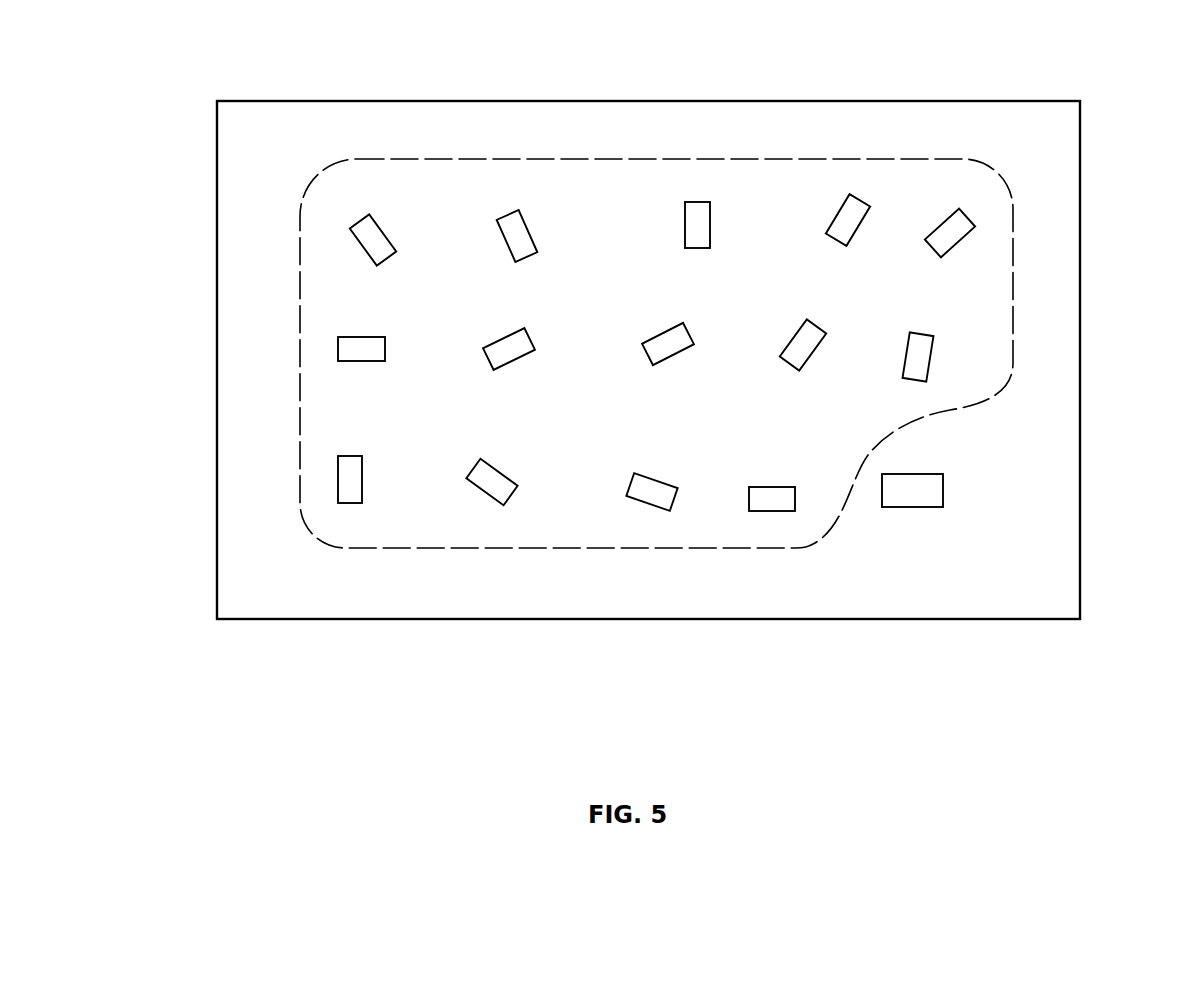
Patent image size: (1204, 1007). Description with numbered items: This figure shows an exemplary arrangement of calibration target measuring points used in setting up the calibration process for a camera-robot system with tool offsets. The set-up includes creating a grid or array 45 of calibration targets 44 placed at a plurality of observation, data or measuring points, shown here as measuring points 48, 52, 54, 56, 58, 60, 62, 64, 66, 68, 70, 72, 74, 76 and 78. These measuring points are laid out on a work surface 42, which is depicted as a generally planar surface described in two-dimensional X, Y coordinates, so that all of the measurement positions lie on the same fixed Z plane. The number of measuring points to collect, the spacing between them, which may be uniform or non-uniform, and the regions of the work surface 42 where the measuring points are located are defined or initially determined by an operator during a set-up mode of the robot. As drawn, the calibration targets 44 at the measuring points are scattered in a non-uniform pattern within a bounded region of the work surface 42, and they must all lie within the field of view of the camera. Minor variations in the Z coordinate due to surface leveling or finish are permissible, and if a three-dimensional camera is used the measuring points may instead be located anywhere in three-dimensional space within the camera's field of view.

The work surface 42 is at (264, 592).
The calibration targets 44 is at (383, 222).
The grid or array 45 is at (1052, 654).
The measuring point 48 is at (905, 507).
The measuring point 52 is at (773, 512).
The measuring point 54 is at (641, 510).
The measuring point 56 is at (481, 502).
The measuring point 58 is at (350, 505).
The measuring point 60 is at (923, 332).
The measuring point 62 is at (812, 360).
The measuring point 64 is at (660, 332).
The measuring point 66 is at (503, 335).
The measuring point 68 is at (350, 336).
The measuring point 70 is at (963, 213).
The measuring point 72 is at (866, 200).
The measuring point 74 is at (697, 200).
The measuring point 76 is at (503, 212).
The measuring point 78 is at (360, 226).